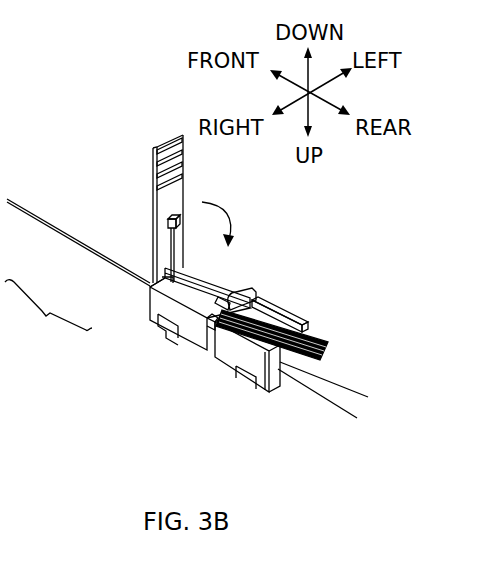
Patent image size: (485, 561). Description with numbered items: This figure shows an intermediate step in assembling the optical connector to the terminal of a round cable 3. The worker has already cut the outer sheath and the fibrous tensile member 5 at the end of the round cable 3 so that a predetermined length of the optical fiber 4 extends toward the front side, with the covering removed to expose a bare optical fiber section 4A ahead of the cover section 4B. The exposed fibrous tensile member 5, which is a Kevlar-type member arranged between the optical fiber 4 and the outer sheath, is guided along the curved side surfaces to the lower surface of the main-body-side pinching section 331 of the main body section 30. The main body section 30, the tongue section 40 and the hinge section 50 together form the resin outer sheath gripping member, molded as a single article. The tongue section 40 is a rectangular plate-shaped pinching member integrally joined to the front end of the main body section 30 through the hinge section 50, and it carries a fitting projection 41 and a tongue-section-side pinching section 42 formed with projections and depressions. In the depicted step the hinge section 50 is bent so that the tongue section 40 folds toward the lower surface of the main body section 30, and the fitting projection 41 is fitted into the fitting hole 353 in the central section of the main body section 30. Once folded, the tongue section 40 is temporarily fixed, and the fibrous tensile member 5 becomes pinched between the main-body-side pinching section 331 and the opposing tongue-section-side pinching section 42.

The round cable 3 is at (340, 387).
The optical fiber 4 is at (48, 311).
The bare optical fiber section 4A is at (26, 212).
The cover section 4B is at (84, 246).
The fibrous tensile member 5 is at (313, 340).
The main body section 30 is at (197, 350).
The tongue section 40 is at (132, 203).
The fitting projection 41 is at (168, 222).
The tongue-section-side pinching section 42 is at (153, 181).
The hinge section 50 is at (152, 286).
The main-body-side pinching section 331 is at (272, 320).
The fitting hole 353 is at (243, 306).